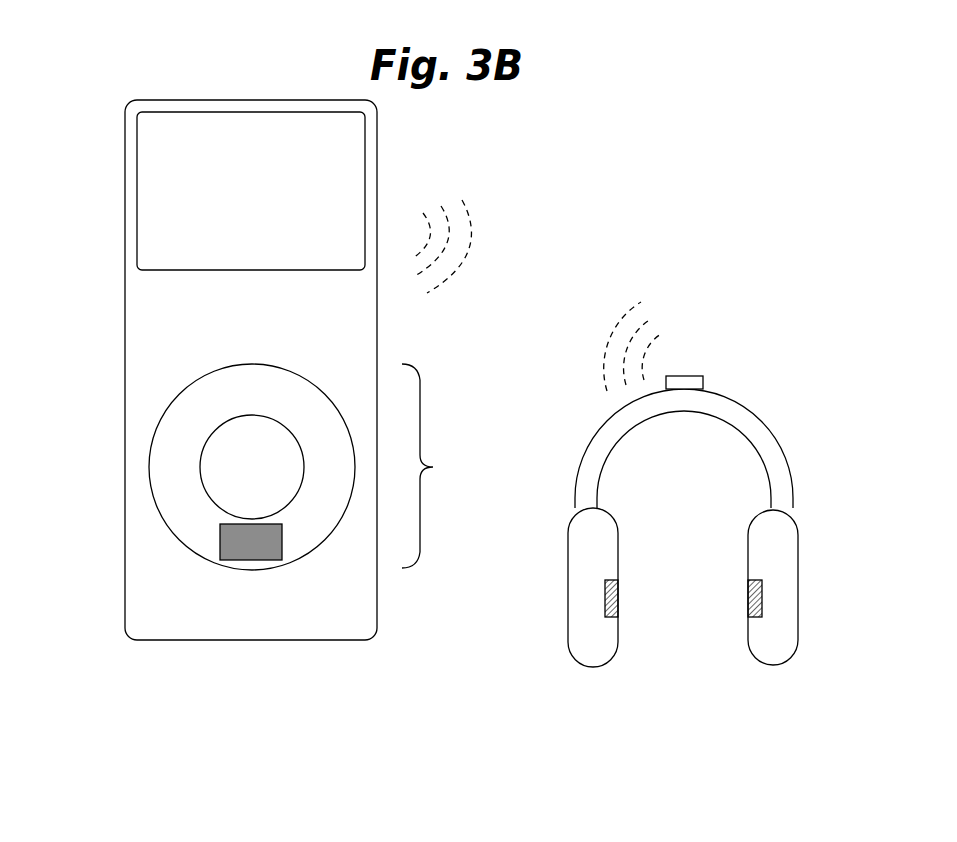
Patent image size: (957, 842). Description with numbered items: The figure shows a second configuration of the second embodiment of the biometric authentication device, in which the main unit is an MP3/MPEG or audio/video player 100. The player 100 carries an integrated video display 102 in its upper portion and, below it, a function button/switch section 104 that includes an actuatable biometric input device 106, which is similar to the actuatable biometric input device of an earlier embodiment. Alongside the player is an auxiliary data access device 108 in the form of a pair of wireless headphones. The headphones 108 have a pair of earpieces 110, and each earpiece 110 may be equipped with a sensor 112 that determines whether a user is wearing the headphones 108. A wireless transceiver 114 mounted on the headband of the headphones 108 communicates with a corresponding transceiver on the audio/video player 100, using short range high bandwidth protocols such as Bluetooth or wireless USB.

The audio/video player 100 is at (150, 305).
The integrated video display 102 is at (150, 196).
The function button/switch section 104 is at (316, 467).
The actuatable biometric input device 106 is at (262, 547).
The auxiliary data access device 108 is at (605, 448).
The earpieces 110 is at (582, 556).
The sensor 112 is at (752, 590).
The wireless transceiver 114 is at (690, 381).